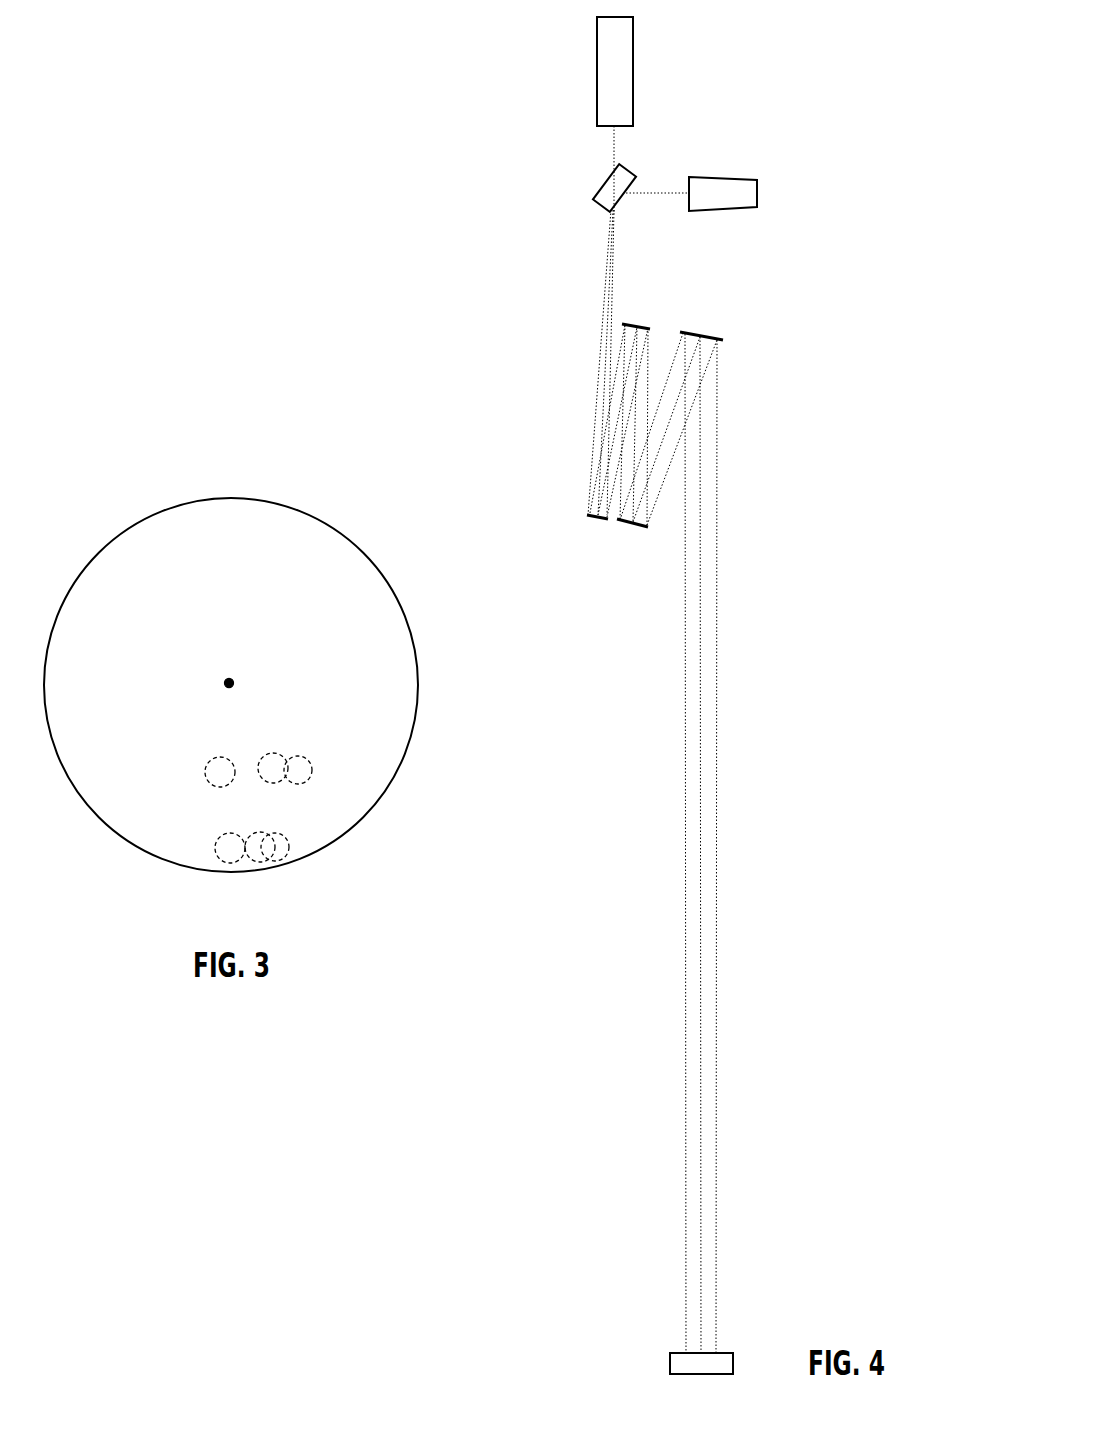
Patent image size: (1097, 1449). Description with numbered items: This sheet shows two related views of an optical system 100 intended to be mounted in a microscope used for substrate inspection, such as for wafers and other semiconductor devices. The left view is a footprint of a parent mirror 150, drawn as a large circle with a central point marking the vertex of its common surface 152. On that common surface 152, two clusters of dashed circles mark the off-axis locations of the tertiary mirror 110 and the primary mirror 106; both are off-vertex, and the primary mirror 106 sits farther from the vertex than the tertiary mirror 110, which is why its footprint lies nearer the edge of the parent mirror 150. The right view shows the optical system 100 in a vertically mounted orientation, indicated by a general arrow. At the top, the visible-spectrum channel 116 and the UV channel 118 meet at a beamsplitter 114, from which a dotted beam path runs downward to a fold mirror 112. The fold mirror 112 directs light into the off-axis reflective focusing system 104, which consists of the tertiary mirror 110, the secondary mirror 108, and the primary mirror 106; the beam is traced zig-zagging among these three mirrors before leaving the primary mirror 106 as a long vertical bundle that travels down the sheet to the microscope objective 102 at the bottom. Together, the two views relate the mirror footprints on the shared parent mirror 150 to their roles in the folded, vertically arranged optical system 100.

In FIG. 4, the optical system 100 is at (775, 30).
In FIG. 4, the microscope objective 102 is at (670, 1362).
In FIG. 4, the off-axis reflective focusing system 104 is at (746, 353).
In FIG. 3, the primary mirror 106 is at (290, 850).
In FIG. 4, the primary mirror 106 is at (710, 337).
In FIG. 4, the secondary mirror 108 is at (635, 523).
In FIG. 3, the tertiary mirror 110 is at (313, 770).
In FIG. 4, the tertiary mirror 110 is at (642, 328).
In FIG. 4, the fold mirror 112 is at (598, 520).
In FIG. 4, the beamsplitter 114 is at (600, 193).
In FIG. 4, the visible-spectrum channel 116 is at (597, 70).
In FIG. 4, the UV channel 118 is at (723, 177).
In FIG. 3, the parent mirror 150 is at (230, 497).
In FIG. 3, the common surface 152 is at (232, 682).